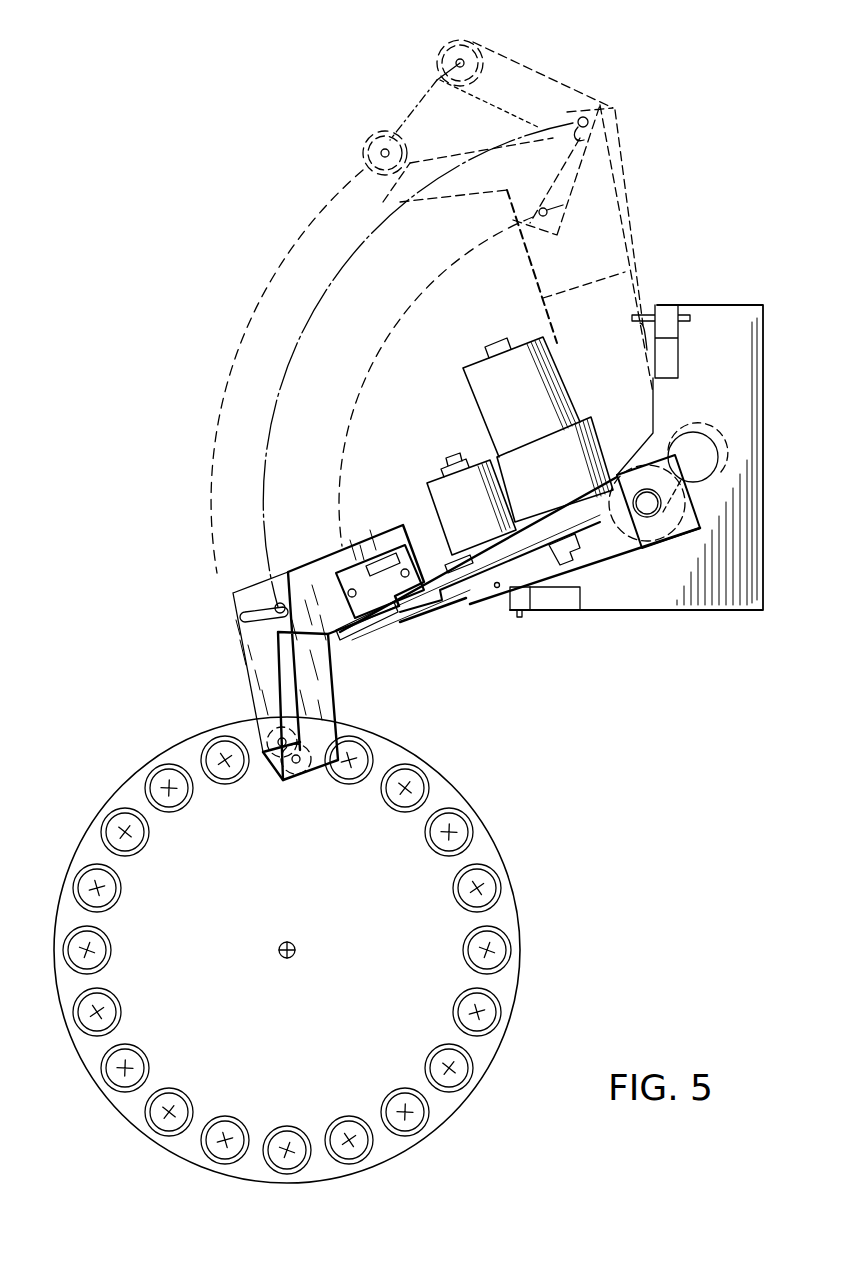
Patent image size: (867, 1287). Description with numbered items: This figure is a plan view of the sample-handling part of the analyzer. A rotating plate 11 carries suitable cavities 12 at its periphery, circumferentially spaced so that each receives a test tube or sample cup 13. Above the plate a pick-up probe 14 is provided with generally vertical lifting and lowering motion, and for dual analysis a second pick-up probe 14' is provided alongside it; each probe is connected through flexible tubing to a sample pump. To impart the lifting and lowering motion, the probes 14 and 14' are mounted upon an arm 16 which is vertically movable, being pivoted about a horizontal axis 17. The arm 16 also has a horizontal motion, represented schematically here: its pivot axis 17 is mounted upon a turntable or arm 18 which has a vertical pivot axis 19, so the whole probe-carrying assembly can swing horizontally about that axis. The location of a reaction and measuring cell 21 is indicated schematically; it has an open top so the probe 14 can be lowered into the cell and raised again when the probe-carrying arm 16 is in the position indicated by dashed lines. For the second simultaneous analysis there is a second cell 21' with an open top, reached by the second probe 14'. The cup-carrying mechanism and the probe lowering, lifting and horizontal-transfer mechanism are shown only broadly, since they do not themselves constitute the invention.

The rotating plate 11 is at (480, 797).
The cavities 12 is at (142, 847).
The sample cups 13 is at (110, 816).
The pick-up probe 14 is at (351, 385).
The second pick-up probe 14' is at (344, 464).
The arm 16 is at (400, 622).
The horizontal axis 17 is at (497, 592).
The arm 18 is at (703, 510).
The vertical pivot axis 19 is at (647, 505).
The reaction and measuring cell 21 is at (399, 77).
The second cell 21' is at (419, 160).